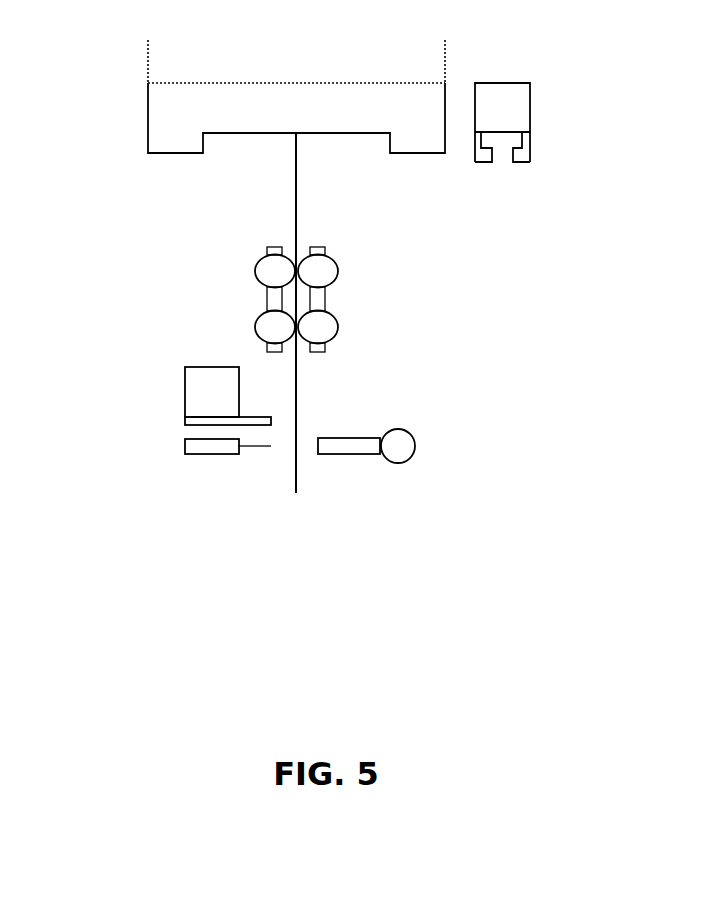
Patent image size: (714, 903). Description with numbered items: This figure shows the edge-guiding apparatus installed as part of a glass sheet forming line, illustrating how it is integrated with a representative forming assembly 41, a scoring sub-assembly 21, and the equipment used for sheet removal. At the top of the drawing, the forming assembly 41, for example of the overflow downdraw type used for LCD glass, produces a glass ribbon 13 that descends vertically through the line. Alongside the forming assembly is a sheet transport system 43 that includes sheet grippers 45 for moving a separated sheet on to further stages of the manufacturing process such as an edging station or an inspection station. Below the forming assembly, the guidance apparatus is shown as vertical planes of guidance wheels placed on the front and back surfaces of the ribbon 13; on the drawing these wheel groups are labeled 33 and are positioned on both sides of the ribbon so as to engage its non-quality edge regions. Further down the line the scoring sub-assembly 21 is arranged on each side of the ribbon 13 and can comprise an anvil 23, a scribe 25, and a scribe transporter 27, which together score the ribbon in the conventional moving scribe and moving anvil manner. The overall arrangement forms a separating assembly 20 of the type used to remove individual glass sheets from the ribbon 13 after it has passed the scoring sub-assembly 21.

The glass ribbon 13 is at (293, 455).
The separating assembly 20 is at (192, 487).
The scoring sub-assembly 21 is at (165, 351).
The anvil 23 is at (360, 446).
The scribe 25 is at (185, 452).
The scribe transporter 27 is at (195, 391).
The roller pairs 33 is at (243, 253).
The forming assembly 41 is at (320, 83).
The sheet transport system 43 is at (483, 90).
The sheet grippers 45 is at (522, 155).